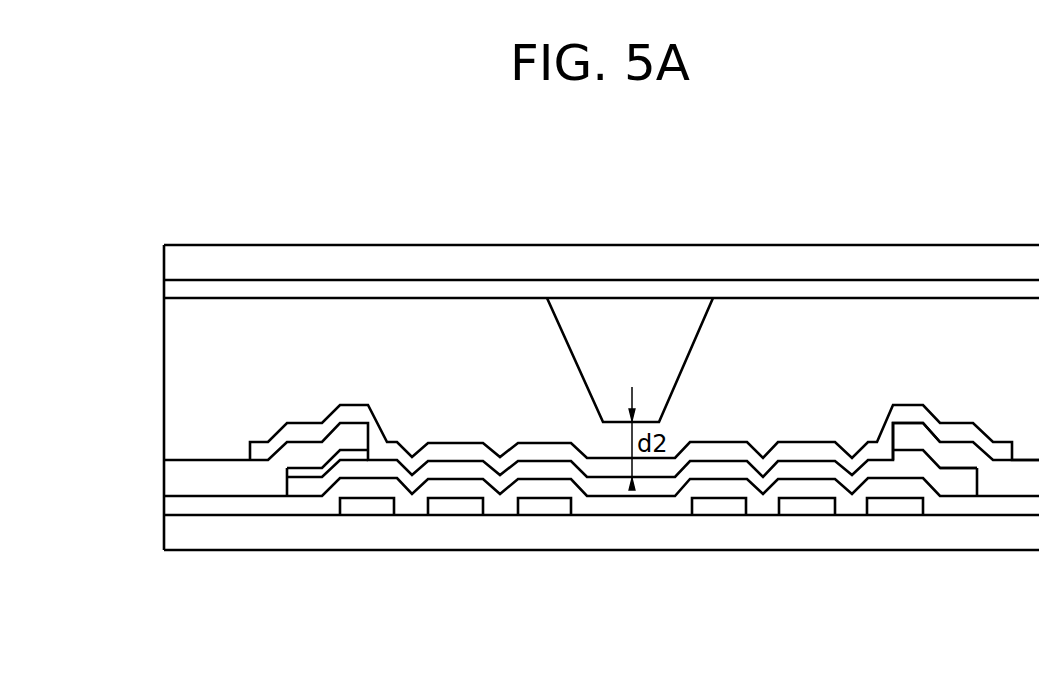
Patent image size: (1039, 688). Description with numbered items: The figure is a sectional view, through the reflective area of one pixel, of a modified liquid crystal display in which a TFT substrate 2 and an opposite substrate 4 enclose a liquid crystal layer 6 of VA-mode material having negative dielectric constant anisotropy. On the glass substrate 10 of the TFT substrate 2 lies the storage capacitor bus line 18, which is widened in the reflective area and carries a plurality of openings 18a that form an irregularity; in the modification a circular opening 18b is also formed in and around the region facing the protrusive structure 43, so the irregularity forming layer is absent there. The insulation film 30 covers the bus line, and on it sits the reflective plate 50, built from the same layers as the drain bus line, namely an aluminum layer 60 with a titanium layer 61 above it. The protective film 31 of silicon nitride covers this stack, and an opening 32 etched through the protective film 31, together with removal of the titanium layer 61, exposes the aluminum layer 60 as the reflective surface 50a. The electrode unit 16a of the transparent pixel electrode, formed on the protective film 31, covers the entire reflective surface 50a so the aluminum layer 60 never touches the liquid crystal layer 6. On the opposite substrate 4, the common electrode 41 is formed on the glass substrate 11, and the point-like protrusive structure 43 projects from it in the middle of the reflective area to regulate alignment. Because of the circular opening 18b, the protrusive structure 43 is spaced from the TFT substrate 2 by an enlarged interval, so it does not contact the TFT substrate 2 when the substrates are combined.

The TFT substrate 2 is at (558, 552).
The opposite substrate 4 is at (558, 245).
The liquid crystal layer 6 is at (185, 375).
The glass substrate 10 is at (173, 538).
The glass substrate 11 is at (173, 260).
The electrode unit 16a is at (907, 407).
The storage capacitor bus line 18 is at (367, 505).
The openings 18a is at (495, 530).
The circular opening 18b is at (632, 530).
The insulation film 30 is at (172, 504).
The protective film 31 is at (173, 477).
The opening 32 is at (455, 414).
The common electrode 41 is at (173, 290).
The protrusive structure 43 is at (657, 320).
The reflective plate 50 is at (540, 470).
The reflective surface 50a is at (562, 462).
The aluminum layer 60 is at (957, 487).
The titanium layer 61 is at (977, 470).